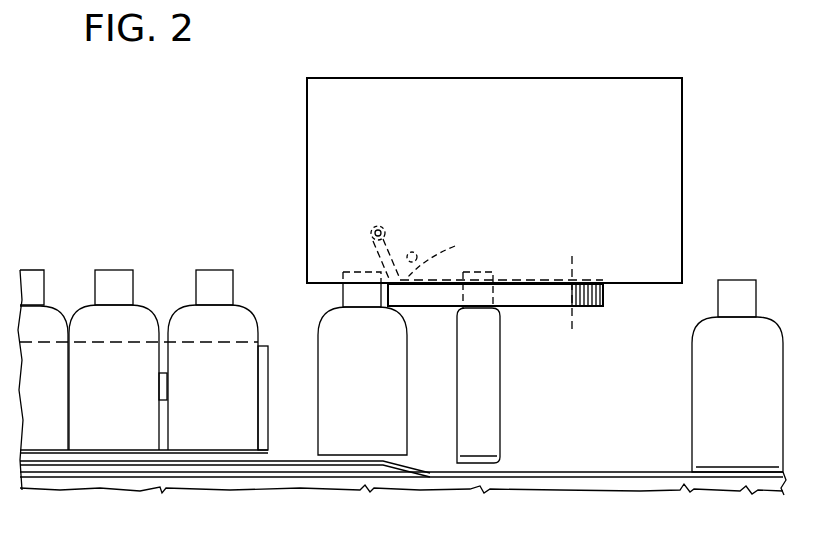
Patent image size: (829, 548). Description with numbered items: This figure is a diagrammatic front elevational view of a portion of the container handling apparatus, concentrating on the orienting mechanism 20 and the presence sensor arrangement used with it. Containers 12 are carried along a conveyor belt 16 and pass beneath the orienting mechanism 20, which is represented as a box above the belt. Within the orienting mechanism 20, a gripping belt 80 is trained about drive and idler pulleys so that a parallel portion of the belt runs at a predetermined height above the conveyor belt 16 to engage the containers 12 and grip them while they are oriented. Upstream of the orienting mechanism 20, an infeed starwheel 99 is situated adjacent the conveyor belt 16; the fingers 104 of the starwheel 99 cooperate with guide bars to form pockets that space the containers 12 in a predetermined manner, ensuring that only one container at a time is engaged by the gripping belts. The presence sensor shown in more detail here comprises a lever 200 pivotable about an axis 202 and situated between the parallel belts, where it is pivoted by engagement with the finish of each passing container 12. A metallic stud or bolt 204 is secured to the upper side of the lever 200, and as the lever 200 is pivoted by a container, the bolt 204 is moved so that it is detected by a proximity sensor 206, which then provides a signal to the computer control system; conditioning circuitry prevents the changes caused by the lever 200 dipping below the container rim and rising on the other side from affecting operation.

The orienting mechanism 20 is at (600, 68).
The containers 12 is at (114, 405).
The conveyor belt 16 is at (651, 424).
The gripping belt 80 is at (556, 297).
The infeed starwheel 99 is at (273, 344).
The fingers 104 is at (152, 398).
The lever 200 is at (378, 250).
The axis 202 is at (382, 226).
The bolt 204 is at (458, 255).
The proximity sensor 206 is at (416, 252).